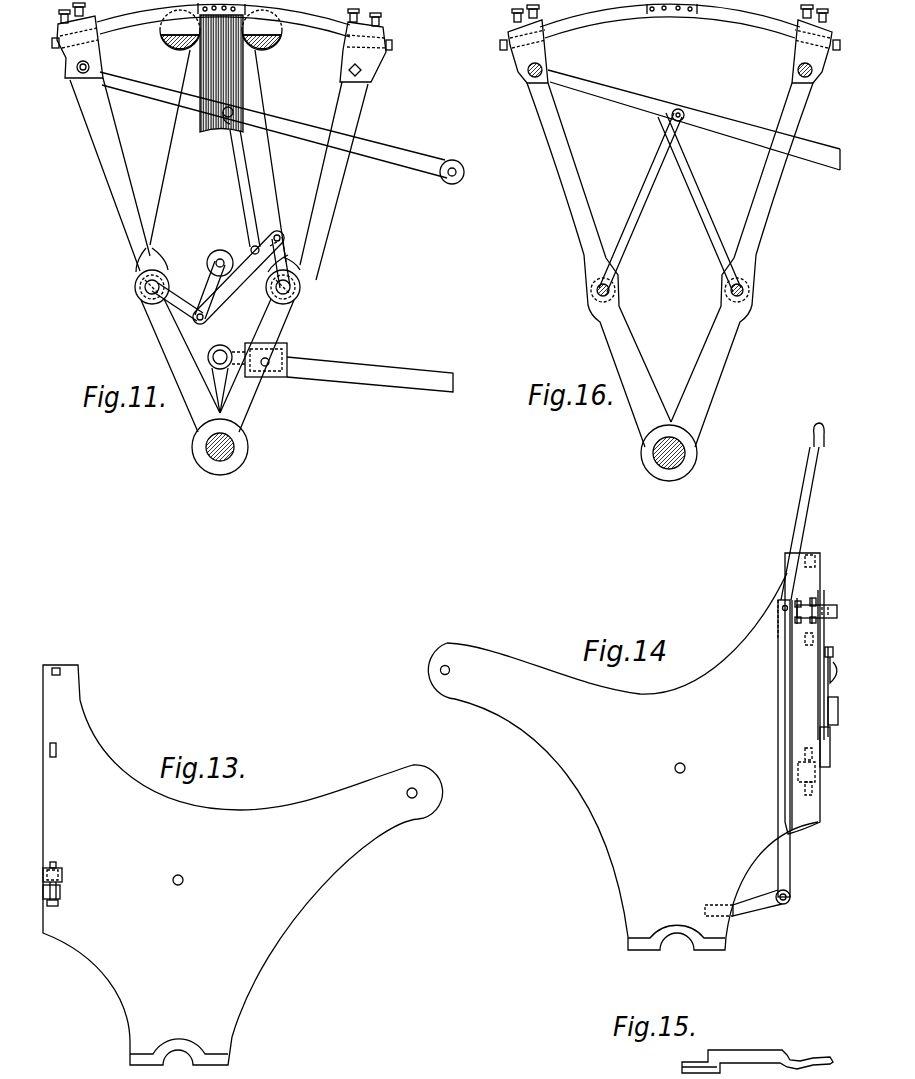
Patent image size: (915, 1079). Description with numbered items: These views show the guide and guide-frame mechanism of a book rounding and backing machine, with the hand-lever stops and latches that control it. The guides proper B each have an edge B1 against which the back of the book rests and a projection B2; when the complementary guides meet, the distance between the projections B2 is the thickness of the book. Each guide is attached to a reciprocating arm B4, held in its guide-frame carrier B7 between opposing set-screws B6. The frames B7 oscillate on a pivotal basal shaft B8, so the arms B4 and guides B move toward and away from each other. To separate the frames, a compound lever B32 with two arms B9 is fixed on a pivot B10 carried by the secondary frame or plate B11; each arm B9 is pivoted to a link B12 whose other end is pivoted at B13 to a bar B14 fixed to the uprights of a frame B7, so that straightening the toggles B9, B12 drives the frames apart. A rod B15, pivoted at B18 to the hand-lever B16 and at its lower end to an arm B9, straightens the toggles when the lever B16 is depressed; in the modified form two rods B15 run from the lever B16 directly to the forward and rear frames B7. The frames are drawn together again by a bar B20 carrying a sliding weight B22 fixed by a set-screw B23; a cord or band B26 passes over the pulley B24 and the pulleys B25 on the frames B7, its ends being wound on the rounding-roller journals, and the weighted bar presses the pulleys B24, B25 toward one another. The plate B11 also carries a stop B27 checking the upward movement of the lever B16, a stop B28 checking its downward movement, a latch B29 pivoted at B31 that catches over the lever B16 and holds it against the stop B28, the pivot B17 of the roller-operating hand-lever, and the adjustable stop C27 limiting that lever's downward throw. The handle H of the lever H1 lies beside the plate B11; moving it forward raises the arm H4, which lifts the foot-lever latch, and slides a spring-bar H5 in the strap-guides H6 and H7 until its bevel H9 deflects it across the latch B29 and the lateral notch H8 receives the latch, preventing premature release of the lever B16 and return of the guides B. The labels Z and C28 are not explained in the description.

In FIG. 11, the guide B is at (163, 43).
In FIG. 16, the guide B is at (652, 16).
In FIG. 16, the edge of the guide B1 is at (664, 12).
In FIG. 16, the projection of the guide B2 is at (648, 20).
In FIG. 11, the reciprocating arm B4 is at (127, 28).
In FIG. 16, the reciprocating arm B4 is at (562, 30).
In FIG. 11, the set-screws B6 is at (86, 12).
In FIG. 16, the set-screws B6 is at (513, 20).
In FIG. 11, the guide-frame carrier B7 is at (118, 192).
In FIG. 16, the guide-frame carrier B7 is at (569, 195).
In FIG. 11, the pivotal basal shaft B8 is at (212, 447).
In FIG. 11, the arm of the compound lever B9 is at (256, 241).
In FIG. 11, the pivot B10 is at (216, 261).
In FIG. 13, the pivot B10 is at (192, 883).
In FIG. 14, the pivot B10 is at (674, 770).
In FIG. 13, the secondary frame B11 is at (243, 865).
In FIG. 14, the secondary frame B11 is at (623, 761).
In FIG. 11, the link B12 is at (198, 302).
In FIG. 11, the pivot B13 is at (146, 290).
In FIG. 11, the bar B14 is at (150, 291).
In FIG. 16, the bar B14 is at (597, 290).
In FIG. 11, the rod B15 is at (237, 168).
In FIG. 16, the rod B15 is at (652, 167).
In FIG. 11, the lever B16 is at (134, 86).
In FIG. 16, the lever B16 is at (590, 90).
In FIG. 11, the pivot B17 is at (466, 172).
In FIG. 13, the pivot B17 is at (407, 793).
In FIG. 14, the pivot B17 is at (450, 670).
In FIG. 11, the pivot B18 is at (236, 110).
In FIG. 16, the pivot B18 is at (685, 114).
In FIG. 11, the bar B20 is at (421, 378).
In FIG. 11, the sliding weight B22 is at (288, 348).
In FIG. 11, the set-screw B23 is at (268, 366).
In FIG. 11, the pulley B24 is at (219, 370).
In FIG. 11, the pulley B25 is at (141, 278).
In FIG. 11, the operating pulley cord or band B26 is at (160, 163).
In FIG. 13, the stop B27 is at (60, 679).
In FIG. 13, the stop B28 is at (56, 751).
In FIG. 14, the latch B29 is at (826, 660).
In FIG. 14, the pivot B31 is at (830, 683).
In FIG. 11, the compound lever B32 is at (250, 248).
In FIG. 13, the stop C27 is at (58, 866).
In FIG. 13, the clamp C28 is at (62, 877).
In FIG. 14, the clamp C28 is at (829, 711).
In FIG. 11, the cylinder Z is at (214, 68).
In FIG. 14, the handle H is at (812, 439).
In FIG. 14, the lever H1 is at (806, 497).
In FIG. 14, the arm or lever H4 is at (753, 907).
In FIG. 14, the spring-bar H5 is at (830, 665).
In FIG. 15, the spring-bar H5 is at (738, 1057).
In FIG. 14, the strap-guide H6 is at (820, 604).
In FIG. 14, the strap-guide H7 is at (800, 600).
In FIG. 15, the lateral notch H8 is at (792, 1061).
In FIG. 15, the bevel H9 is at (813, 1057).